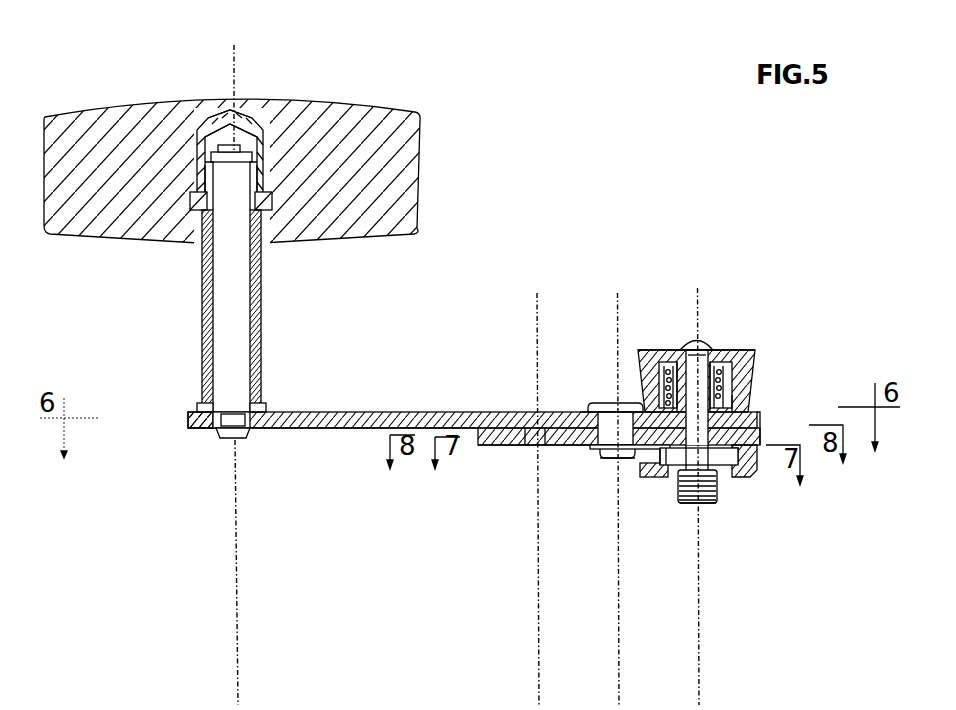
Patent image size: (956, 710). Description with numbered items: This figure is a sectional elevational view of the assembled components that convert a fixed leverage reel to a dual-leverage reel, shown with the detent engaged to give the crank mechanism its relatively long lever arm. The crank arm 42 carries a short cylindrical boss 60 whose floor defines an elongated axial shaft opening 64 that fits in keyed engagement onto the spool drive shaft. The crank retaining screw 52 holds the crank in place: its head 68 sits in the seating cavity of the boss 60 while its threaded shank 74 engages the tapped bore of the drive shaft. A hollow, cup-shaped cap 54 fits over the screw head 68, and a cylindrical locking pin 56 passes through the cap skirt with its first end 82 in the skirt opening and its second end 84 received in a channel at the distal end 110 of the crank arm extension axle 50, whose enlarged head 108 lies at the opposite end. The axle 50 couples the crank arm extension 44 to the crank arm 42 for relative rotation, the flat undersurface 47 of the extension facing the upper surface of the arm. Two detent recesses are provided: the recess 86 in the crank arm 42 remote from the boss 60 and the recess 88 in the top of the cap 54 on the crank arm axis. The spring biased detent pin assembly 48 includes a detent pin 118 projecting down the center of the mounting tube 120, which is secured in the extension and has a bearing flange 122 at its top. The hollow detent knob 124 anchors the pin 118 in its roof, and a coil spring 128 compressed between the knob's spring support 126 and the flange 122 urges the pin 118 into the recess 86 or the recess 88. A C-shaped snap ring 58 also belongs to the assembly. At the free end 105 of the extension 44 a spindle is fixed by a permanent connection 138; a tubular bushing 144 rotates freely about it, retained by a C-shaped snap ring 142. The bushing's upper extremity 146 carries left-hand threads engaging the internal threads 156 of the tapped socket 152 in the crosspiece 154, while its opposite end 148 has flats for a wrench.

The crank arm 42 is at (477, 452).
The crank arm extension 44 is at (399, 409).
The undersurface 47 is at (303, 430).
The detent pin assembly 48 is at (714, 329).
The crank arm extension axle 50 is at (603, 395).
The crank retaining screw 52 is at (713, 486).
The retaining screw cap 54 is at (745, 455).
The locking pin 56 is at (640, 453).
The C-shaped snap ring 58 is at (585, 412).
The boss 60 is at (760, 433).
The axial shaft opening 64 is at (680, 466).
The head 68 is at (717, 470).
The shank 74 is at (700, 503).
The first end 82 is at (666, 450).
The second end 84 is at (632, 450).
The detent recess 86 is at (548, 437).
The detent recess 88 is at (665, 462).
The free end 105 is at (190, 425).
The enlarged head 108 is at (580, 405).
The distal end 110 is at (600, 452).
The detent pin 118 is at (690, 380).
The detent pin mounting tube 120 is at (734, 399).
The bearing flange 122 is at (733, 362).
The detent knob 124 is at (757, 356).
The spring support 126 is at (650, 398).
The coil spring 128 is at (733, 378).
The permanent connection 138 is at (220, 448).
The C-shaped snap ring 142 is at (206, 130).
The tubular bushing 144 is at (275, 303).
The upper extremity 146 is at (261, 183).
The opposite end 148 is at (265, 407).
The internally tapped socket 152 is at (222, 113).
The crosspiece 154 is at (352, 118).
The internal threads 156 is at (247, 135).